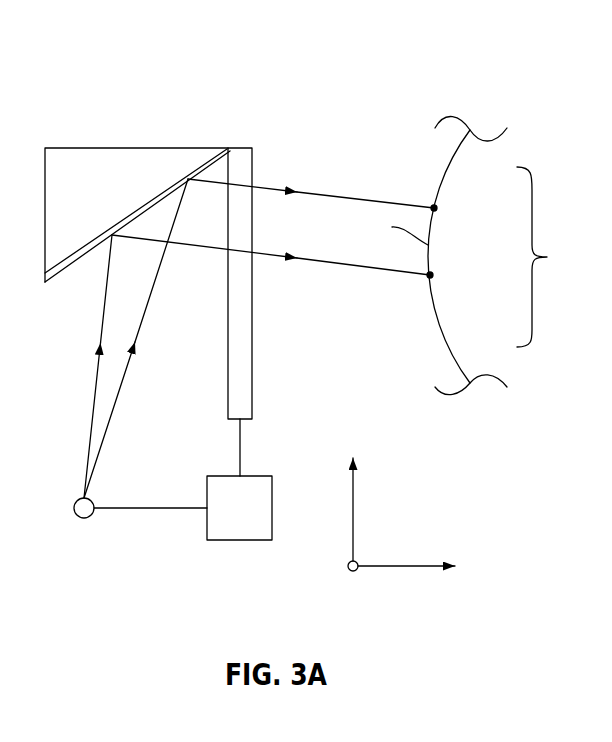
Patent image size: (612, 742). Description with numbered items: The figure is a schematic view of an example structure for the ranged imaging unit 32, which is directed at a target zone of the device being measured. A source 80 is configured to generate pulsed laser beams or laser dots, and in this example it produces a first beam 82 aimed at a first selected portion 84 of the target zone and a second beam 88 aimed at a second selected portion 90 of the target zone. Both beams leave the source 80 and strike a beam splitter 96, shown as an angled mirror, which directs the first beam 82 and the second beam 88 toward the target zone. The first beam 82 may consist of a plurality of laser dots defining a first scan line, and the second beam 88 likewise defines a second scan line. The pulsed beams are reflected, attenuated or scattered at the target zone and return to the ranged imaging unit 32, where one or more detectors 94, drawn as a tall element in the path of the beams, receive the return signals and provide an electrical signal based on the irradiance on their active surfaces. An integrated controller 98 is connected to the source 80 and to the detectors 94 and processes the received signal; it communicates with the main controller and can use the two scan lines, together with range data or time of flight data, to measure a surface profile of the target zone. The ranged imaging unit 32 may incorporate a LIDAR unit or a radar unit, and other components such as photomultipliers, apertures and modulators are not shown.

The ranged imaging unit 32 is at (169, 85).
The source 80 is at (83, 518).
The first beam 82 is at (323, 190).
The first selected portion 84 is at (434, 207).
The second beam 88 is at (323, 260).
The second selected portion 90 is at (430, 278).
The detectors 94 is at (252, 378).
The beam splitter 96 is at (98, 247).
The integrated controller 98 is at (240, 540).